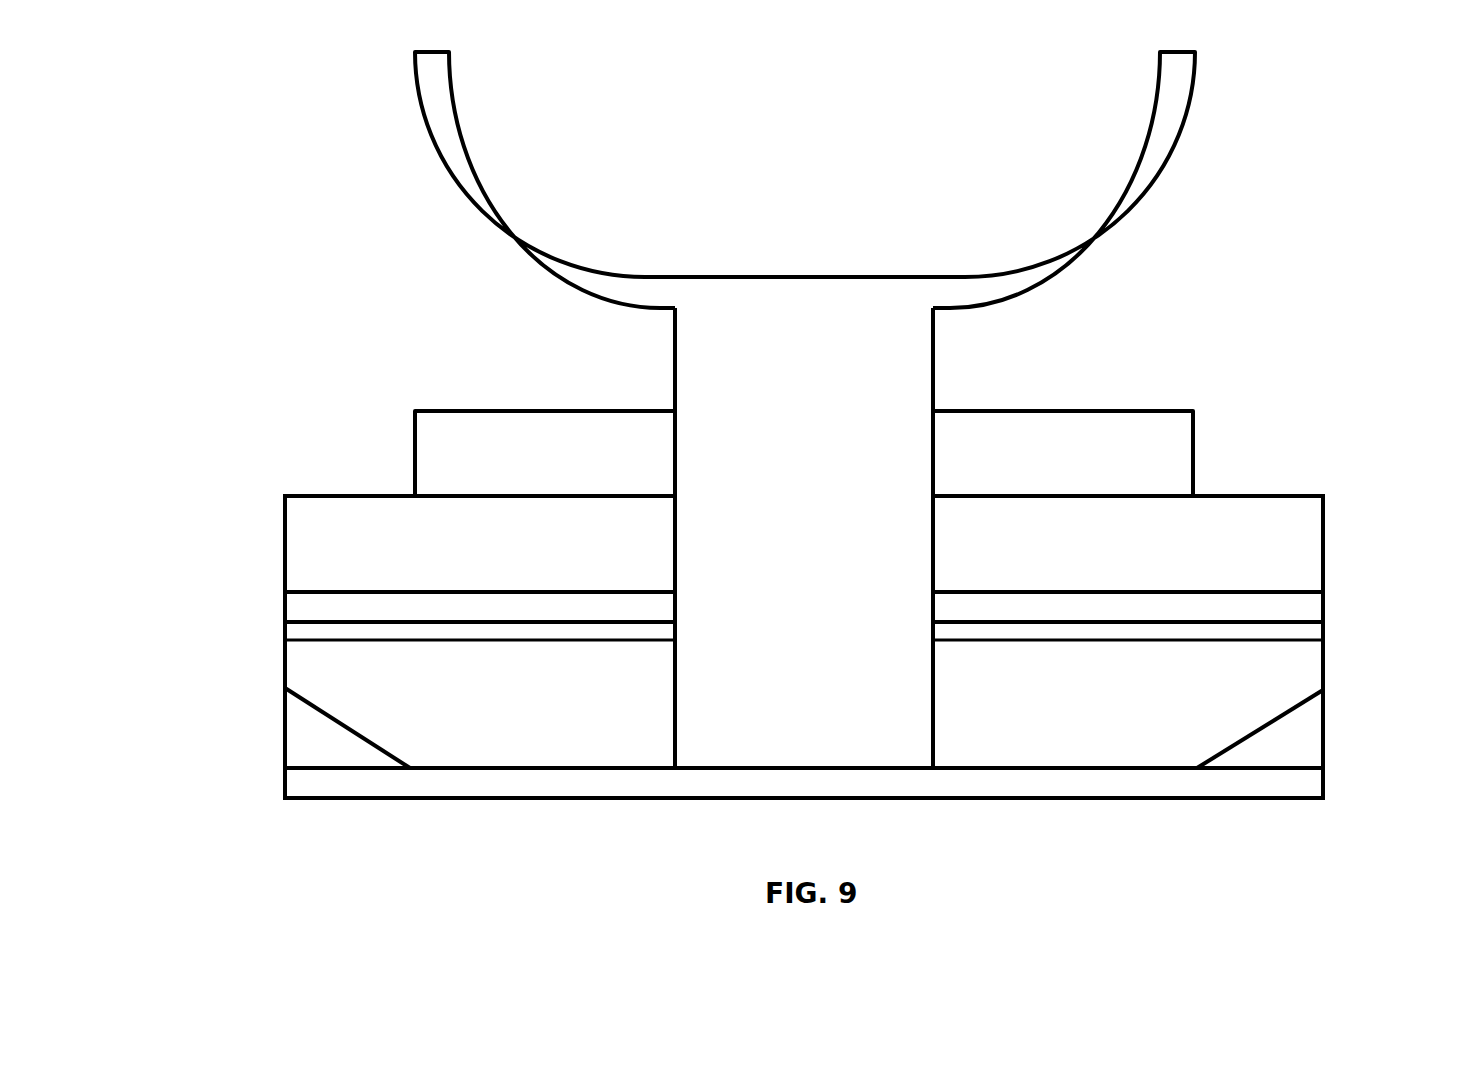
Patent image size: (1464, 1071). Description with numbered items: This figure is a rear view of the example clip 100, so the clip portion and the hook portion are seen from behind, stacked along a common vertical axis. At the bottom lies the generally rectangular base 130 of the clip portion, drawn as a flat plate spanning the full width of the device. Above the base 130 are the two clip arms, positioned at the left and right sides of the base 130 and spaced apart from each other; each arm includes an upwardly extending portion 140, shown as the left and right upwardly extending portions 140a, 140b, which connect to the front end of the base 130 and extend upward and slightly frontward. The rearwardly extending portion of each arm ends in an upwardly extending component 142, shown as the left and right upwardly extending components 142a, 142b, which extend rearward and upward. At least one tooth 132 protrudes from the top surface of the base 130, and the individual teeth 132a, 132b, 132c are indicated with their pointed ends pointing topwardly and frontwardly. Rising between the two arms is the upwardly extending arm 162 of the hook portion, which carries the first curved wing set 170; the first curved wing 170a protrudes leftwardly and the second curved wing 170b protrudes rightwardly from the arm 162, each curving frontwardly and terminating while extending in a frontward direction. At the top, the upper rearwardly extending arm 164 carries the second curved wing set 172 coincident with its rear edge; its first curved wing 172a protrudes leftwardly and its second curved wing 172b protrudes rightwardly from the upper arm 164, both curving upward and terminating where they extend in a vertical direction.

The clip 100 is at (128, 899).
The base 130 is at (1043, 780).
The tooth 132 is at (808, 683).
The tooth 132a is at (345, 551).
The tooth 132b is at (1271, 564).
The tooth 132c is at (1282, 745).
The upwardly extending portion 140 is at (804, 704).
The upwardly extending portion 140a is at (331, 689).
The upwardly extending portion 140b is at (1266, 691).
The upwardly extending component 142 is at (811, 607).
The upwardly extending component 142a is at (345, 606).
The upwardly extending component 142b is at (1271, 609).
The upwardly extending arm 162 is at (818, 530).
The upper rearwardly extending arm 164 is at (827, 288).
The first curved wing set 170 is at (853, 429).
The first curved wing 170a is at (463, 468).
The second curved wing 170b is at (1137, 460).
The second curved wing set 172 is at (864, 180).
The first curved wing 172a is at (492, 207).
The second curved wing 172b is at (1103, 218).